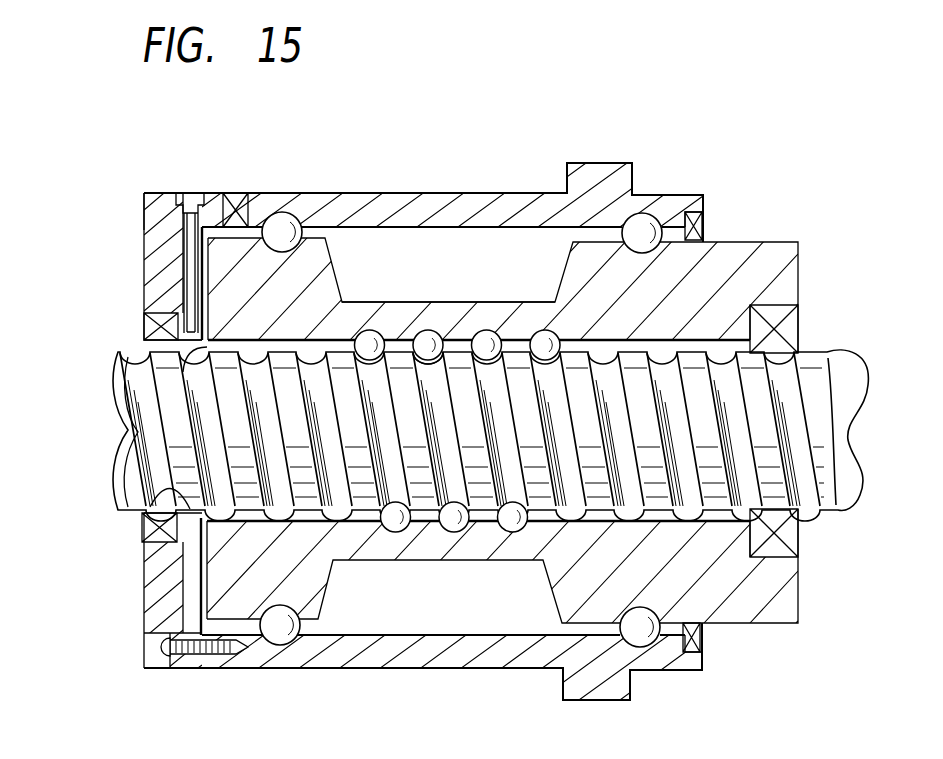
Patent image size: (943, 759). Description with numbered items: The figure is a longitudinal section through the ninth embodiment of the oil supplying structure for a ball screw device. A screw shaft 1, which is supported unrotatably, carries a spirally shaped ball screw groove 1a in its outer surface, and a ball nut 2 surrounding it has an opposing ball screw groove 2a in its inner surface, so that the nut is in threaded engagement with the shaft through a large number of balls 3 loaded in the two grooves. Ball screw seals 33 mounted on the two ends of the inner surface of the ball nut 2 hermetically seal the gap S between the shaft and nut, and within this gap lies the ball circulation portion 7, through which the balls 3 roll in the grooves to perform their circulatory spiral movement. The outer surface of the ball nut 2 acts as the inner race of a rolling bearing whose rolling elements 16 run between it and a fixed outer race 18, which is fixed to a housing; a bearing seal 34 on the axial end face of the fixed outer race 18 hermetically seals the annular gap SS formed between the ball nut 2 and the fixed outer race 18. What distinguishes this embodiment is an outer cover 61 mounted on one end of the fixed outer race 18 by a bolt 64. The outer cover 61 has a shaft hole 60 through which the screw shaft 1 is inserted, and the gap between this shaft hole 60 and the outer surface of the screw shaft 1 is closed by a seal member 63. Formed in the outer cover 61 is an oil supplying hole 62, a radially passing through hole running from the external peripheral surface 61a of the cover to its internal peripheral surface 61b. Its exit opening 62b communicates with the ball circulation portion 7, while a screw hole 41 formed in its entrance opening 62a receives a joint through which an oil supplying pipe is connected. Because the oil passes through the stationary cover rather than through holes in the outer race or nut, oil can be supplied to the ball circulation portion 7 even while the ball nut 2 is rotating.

The screw shaft 1 is at (118, 352).
The ball screw groove 1a is at (418, 335).
The ball nut 2 is at (780, 240).
The ball screw groove 2a is at (370, 332).
The balls 3 is at (428, 332).
The ball circulation portion 7 is at (429, 538).
The rolling elements 16 is at (645, 228).
The fixed outer race 18 is at (374, 200).
The ball screw seals 33 is at (790, 330).
The bearing seal 34 is at (700, 214).
The screw hole 41 is at (190, 195).
The shaft hole 60 is at (150, 506).
The outer cover 61 is at (165, 200).
The external peripheral surface 61a is at (152, 192).
The internal peripheral surface 61b is at (190, 352).
The oil supplying hole 62 is at (235, 248).
The entrance opening 62a is at (200, 200).
The exit opening 62b is at (200, 356).
The seal member 63 is at (150, 328).
The bolt 64 is at (200, 655).
The gap S is at (722, 348).
The annular gap SS is at (522, 268).